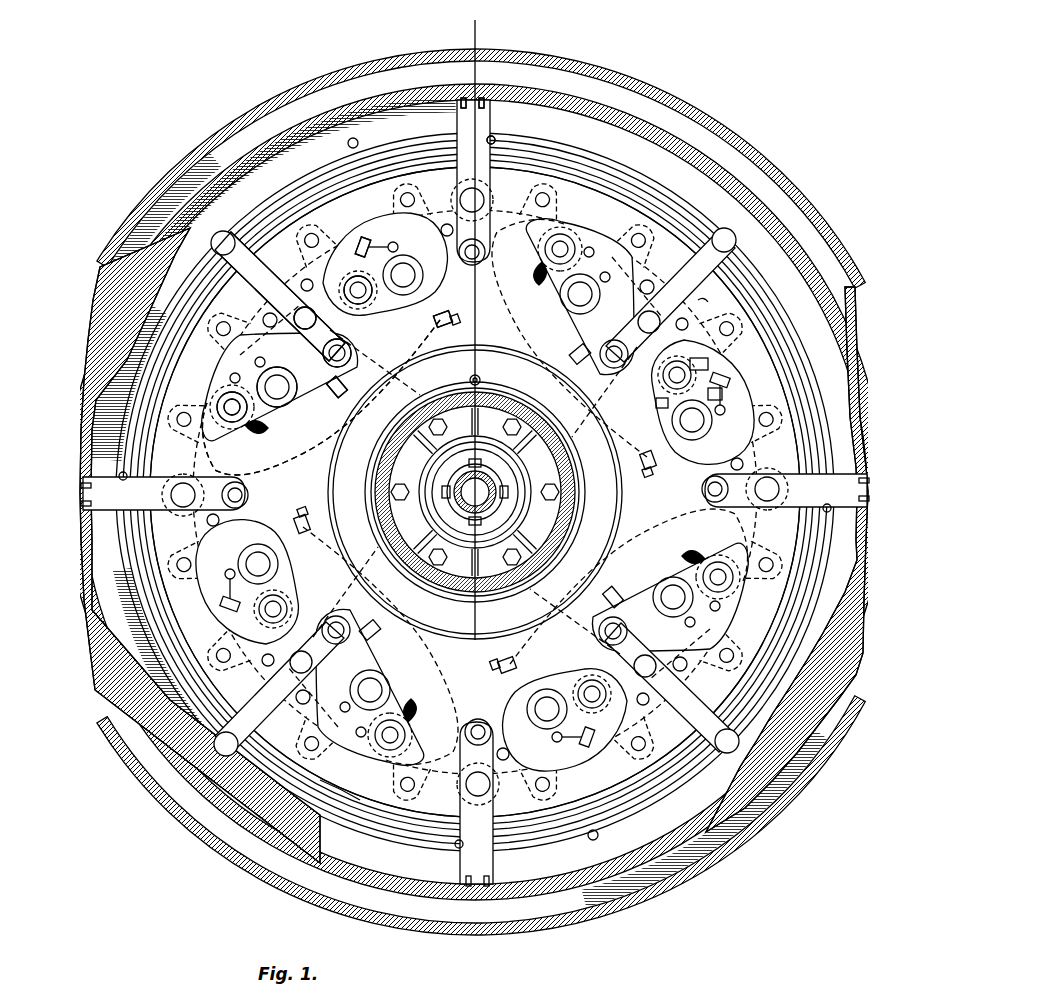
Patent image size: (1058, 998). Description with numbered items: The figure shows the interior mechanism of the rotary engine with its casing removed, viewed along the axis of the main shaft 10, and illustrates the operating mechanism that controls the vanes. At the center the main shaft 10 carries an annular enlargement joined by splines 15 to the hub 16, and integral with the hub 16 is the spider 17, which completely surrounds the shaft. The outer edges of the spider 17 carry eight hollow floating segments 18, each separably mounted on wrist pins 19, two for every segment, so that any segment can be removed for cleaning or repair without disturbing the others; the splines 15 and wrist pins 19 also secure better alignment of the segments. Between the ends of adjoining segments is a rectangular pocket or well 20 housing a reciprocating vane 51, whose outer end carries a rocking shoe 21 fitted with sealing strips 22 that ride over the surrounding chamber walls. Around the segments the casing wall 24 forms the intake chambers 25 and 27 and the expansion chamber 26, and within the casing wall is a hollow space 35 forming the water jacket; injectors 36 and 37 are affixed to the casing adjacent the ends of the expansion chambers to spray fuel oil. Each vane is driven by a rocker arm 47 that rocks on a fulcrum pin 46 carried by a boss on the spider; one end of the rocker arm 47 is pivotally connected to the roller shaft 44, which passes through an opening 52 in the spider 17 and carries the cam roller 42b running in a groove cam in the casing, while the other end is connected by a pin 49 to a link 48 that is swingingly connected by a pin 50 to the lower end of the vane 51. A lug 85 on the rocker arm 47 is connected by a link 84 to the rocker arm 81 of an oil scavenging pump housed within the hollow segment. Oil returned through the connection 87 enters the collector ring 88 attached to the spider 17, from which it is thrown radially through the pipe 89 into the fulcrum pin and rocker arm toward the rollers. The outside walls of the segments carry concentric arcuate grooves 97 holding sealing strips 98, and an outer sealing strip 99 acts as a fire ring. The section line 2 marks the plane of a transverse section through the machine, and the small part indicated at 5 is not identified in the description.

The section line 2- 2 is at (452, 27).
The lever portion 5 is at (704, 304).
The main shaft 10 is at (502, 486).
The splines 15 is at (494, 472).
The hub 16 is at (460, 497).
The spider 17 is at (475, 520).
The floating segments 18 is at (622, 158).
The wrist pins 19 is at (545, 200).
The rectangular pocket or well 20 is at (495, 140).
The rocking shoe 21 is at (223, 233).
The sealing strips 22 is at (463, 96).
The casing wall 24 is at (305, 75).
The intake chamber 25 is at (122, 544).
The expansion chamber 26 is at (565, 130).
The intake chamber 27 is at (847, 444).
The hollow space 35 is at (598, 85).
The injector 36 is at (353, 138).
The injector 37 is at (595, 840).
The cam roller 42b is at (262, 426).
The roller shaft 44 is at (222, 402).
The fulcrum pin 46 is at (280, 398).
The rocker arm 47 is at (334, 392).
The link 48 is at (360, 306).
The pin 49 is at (352, 353).
The pin 50 is at (294, 316).
The reciprocating vane 51 is at (488, 181).
The opening 52 is at (710, 364).
The rocker arm 81 is at (364, 236).
The link 84 is at (724, 394).
The lug 85 is at (666, 406).
The connection 87 is at (478, 376).
The collector ring 88 is at (604, 522).
The pipe 89 is at (434, 318).
The arcuate grooves 97 is at (420, 822).
The sealing strips 98 is at (345, 760).
The sealing strip 99 is at (140, 592).